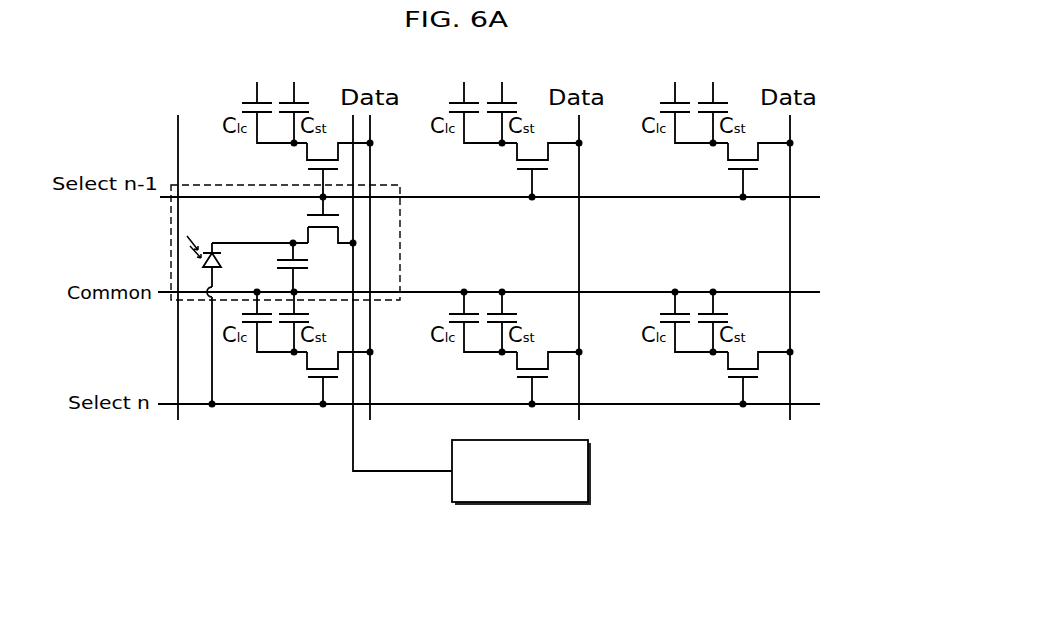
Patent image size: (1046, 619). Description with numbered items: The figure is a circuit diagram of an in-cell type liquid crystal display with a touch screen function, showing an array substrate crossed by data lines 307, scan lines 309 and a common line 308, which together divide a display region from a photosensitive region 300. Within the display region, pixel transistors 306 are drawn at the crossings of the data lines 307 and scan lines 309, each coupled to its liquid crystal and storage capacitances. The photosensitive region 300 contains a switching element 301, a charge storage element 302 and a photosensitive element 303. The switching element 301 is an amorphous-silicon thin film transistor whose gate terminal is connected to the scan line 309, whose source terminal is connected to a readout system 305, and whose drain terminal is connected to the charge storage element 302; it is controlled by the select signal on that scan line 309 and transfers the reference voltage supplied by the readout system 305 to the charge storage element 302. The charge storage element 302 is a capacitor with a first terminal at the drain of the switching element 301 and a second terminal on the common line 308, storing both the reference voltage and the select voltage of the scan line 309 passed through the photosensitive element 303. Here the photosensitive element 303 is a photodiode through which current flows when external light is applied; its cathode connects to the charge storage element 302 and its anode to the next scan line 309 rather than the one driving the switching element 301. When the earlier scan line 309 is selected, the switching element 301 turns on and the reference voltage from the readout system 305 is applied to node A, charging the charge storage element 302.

The photosensitive region 300 is at (171, 184).
The switching element 301 is at (324, 233).
The charge storage element 302 is at (274, 258).
The photosensitive element 303 is at (211, 250).
The readout system 305 is at (592, 470).
The pixel switching transistor 306 is at (305, 162).
The data lines 307 is at (372, 158).
The common line 308 is at (808, 291).
The scan lines 309 is at (803, 198).